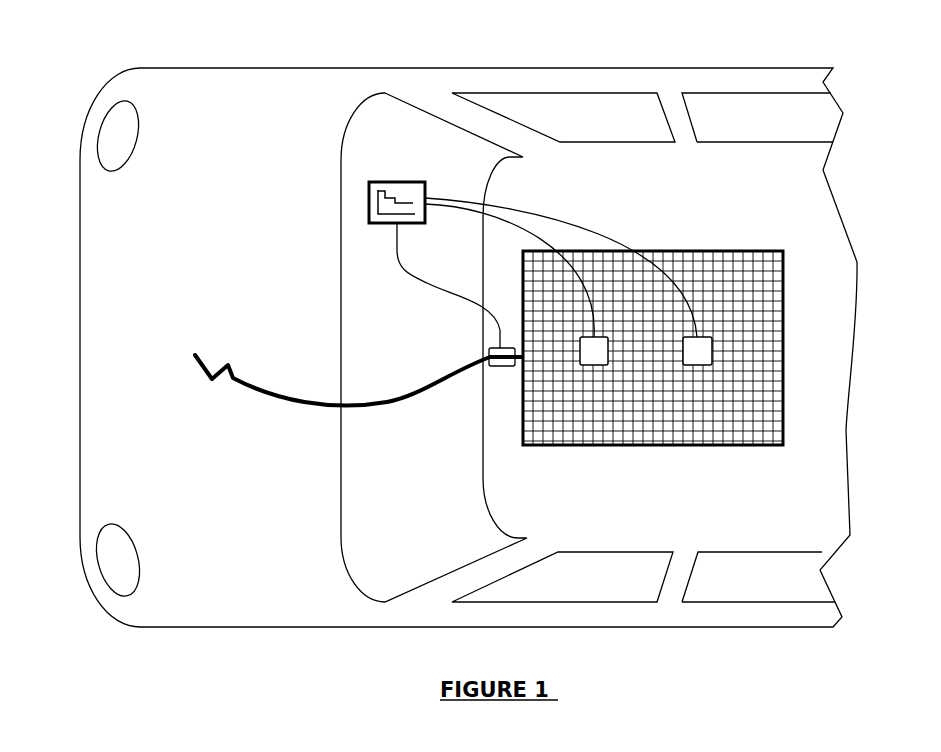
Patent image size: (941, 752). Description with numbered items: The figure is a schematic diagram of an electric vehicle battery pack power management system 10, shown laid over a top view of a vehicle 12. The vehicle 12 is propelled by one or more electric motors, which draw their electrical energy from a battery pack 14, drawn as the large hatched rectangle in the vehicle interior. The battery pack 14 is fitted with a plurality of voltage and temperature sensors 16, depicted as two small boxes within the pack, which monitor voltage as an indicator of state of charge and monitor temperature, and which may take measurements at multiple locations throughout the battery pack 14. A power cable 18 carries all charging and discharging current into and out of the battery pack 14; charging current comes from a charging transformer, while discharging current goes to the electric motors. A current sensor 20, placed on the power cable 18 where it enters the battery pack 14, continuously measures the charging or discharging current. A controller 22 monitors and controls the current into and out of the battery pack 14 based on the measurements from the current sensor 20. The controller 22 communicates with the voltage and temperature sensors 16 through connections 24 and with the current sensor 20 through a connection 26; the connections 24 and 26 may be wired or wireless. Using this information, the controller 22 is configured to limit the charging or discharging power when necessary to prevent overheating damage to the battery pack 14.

The electric vehicle battery pack power management system 10 is at (873, 121).
The vehicle 12 is at (107, 610).
The battery pack 14 is at (718, 251).
The voltage and temperature sensors 16 is at (646, 351).
The power cable 18 is at (381, 412).
The current sensor 20 is at (509, 367).
The controller 22 is at (398, 182).
The connections 24 is at (537, 234).
The connection 26 is at (427, 284).